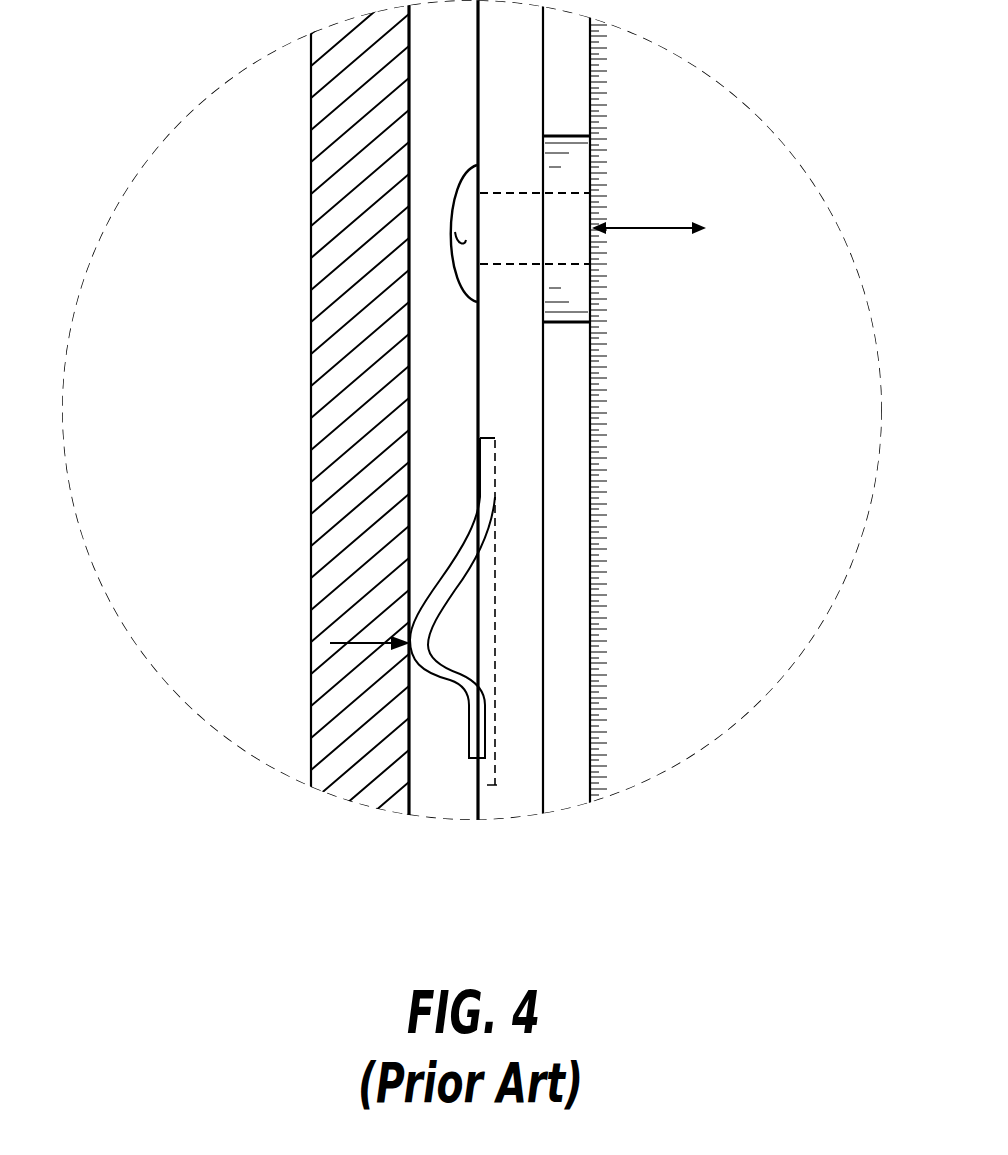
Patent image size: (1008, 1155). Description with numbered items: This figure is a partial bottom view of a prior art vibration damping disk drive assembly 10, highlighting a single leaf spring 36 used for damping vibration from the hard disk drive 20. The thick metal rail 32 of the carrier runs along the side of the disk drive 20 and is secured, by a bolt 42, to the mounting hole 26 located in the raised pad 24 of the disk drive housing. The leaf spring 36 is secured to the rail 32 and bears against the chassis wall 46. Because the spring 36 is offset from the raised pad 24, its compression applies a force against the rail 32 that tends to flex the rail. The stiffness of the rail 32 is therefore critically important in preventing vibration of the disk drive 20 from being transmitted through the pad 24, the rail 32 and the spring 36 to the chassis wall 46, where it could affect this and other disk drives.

The vibration damping disk drive assembly 10 is at (238, 146).
The hard disk drive 20 is at (793, 532).
The raised pad 24 is at (572, 288).
The mounting hole 26 is at (567, 237).
The side rail 32 is at (510, 378).
The leaf spring 36 is at (445, 578).
The bolt 42 is at (469, 163).
The chassis wall 46 is at (311, 272).